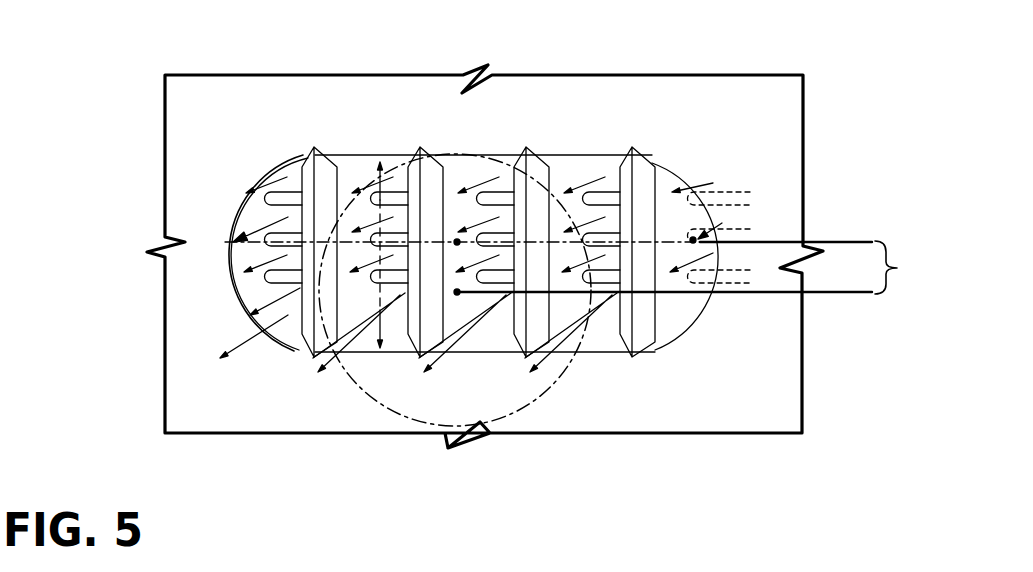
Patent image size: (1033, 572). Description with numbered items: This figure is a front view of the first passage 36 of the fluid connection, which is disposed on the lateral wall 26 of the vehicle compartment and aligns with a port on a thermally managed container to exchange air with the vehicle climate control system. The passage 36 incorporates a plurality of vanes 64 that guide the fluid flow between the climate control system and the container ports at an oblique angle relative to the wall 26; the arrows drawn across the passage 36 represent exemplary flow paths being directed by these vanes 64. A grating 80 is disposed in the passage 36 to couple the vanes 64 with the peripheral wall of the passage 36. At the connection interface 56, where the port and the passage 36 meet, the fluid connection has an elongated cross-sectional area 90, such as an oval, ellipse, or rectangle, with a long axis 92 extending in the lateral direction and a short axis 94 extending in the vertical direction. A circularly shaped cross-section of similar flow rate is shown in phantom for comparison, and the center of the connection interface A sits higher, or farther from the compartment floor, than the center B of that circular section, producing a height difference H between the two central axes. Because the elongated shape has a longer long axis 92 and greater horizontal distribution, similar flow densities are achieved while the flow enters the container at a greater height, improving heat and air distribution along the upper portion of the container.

The lateral wall 26 is at (190, 116).
The first passage 36 is at (562, 153).
The connection interface 56 is at (805, 142).
The vanes 64 is at (337, 167).
The grating 80 is at (262, 278).
The elongated cross-sectional area 90 is at (698, 318).
The long axis 92 is at (275, 185).
The short axis 94 is at (372, 397).
The center of the connection interface A is at (457, 242).
The center of the circularly-shaped cross-section B is at (458, 296).
The height difference H is at (691, 267).